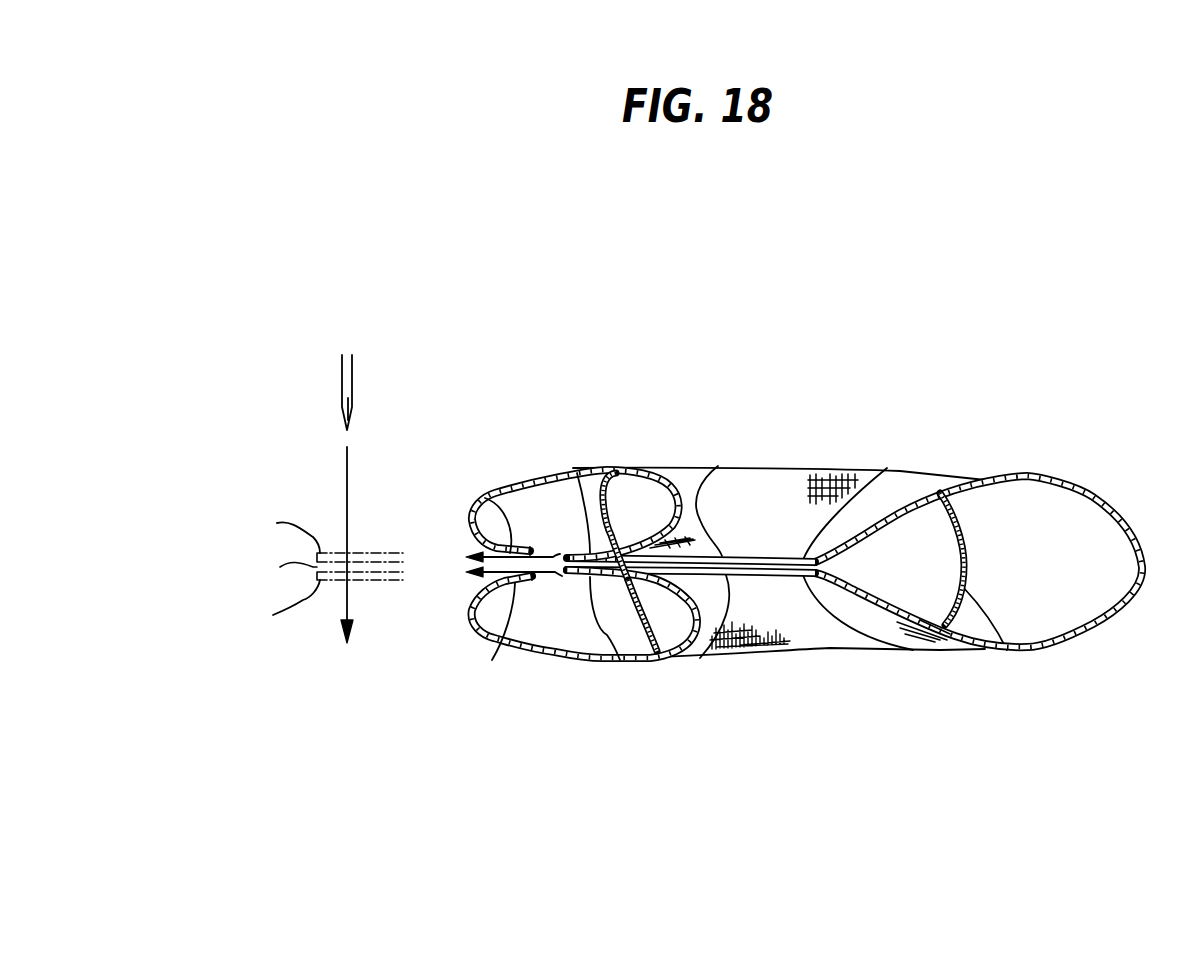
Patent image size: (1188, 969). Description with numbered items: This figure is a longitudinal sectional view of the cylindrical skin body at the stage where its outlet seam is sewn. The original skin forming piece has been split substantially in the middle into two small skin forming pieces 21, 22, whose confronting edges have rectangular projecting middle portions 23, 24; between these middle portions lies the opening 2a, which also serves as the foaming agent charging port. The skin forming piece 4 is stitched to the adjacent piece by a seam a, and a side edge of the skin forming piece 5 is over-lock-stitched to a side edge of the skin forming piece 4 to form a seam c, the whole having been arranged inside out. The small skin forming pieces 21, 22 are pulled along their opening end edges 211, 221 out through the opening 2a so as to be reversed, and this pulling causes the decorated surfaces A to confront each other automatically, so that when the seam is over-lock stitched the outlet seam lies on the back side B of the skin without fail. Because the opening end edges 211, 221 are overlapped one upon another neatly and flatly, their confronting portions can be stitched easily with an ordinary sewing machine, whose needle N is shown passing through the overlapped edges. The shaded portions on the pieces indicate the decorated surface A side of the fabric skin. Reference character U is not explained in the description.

The skin forming piece 4 is at (773, 467).
The skin forming piece 5 is at (1112, 510).
The opening 2a is at (463, 566).
The small skin forming piece 22 is at (530, 473).
The small skin forming piece 21 is at (557, 658).
The opening end edge 221 is at (577, 490).
The opening end edge 211 is at (620, 660).
The middle portion 24 is at (480, 500).
The middle portion 23 is at (492, 660).
The seam a is at (715, 452).
The seam c is at (867, 470).
The needle of a sewing machine N is at (342, 380).
The back side B is at (333, 550).
The lower fabric layer U is at (333, 583).
The decorated surface A is at (280, 567).